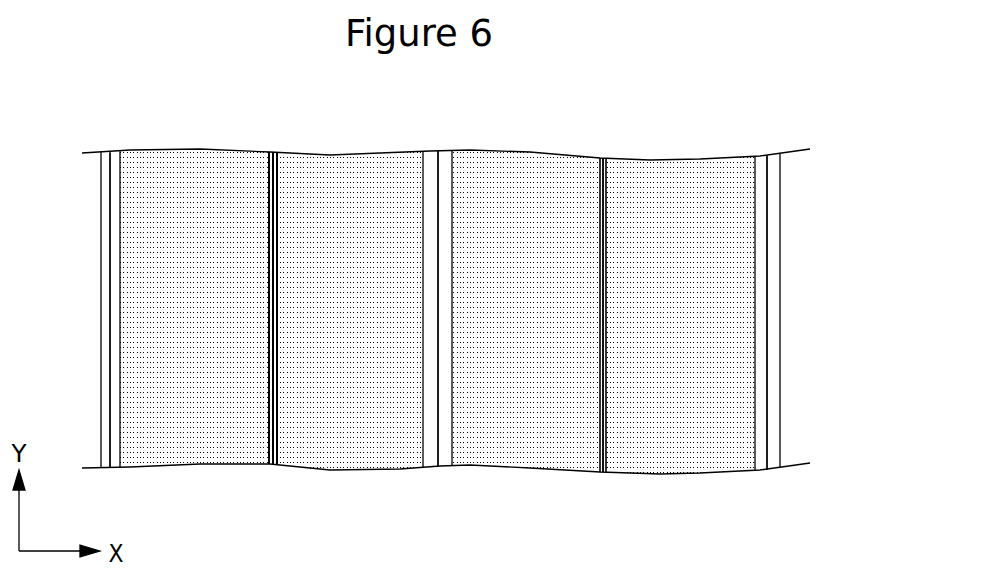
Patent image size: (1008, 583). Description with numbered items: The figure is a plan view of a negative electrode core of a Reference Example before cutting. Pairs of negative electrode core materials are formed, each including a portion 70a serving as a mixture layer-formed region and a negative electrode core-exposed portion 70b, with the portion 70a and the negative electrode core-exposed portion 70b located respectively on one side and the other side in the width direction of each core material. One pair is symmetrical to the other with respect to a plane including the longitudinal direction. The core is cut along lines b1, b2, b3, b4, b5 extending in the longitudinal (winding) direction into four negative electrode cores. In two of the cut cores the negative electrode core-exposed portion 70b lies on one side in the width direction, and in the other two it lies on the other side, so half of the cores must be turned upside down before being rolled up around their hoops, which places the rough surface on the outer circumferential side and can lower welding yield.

The portion serving as a mixture layer-formed region 70a is at (233, 161).
The negative electrode core-exposed portion 70b is at (113, 160).
The cutting line b1 is at (120, 447).
The cutting line b2 is at (276, 448).
The cutting line b3 is at (438, 447).
The cutting line b4 is at (605, 450).
The cutting line b5 is at (766, 450).